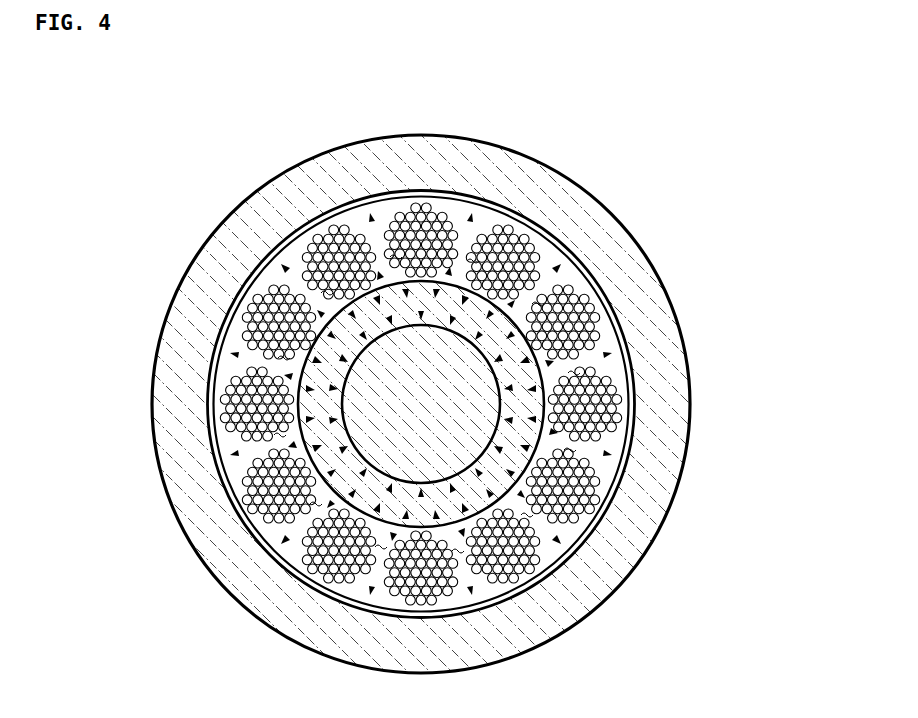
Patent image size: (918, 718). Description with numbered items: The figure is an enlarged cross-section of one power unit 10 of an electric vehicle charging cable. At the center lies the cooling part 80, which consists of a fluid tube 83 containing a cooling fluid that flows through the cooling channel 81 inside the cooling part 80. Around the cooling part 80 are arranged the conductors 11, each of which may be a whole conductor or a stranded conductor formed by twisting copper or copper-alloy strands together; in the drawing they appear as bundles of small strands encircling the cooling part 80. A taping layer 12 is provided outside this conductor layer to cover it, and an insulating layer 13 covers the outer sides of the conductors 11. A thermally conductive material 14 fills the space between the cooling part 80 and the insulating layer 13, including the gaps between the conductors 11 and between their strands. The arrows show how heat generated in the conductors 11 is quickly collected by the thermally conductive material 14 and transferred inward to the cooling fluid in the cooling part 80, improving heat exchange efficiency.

The power unit 10 is at (203, 177).
The conductor 11 is at (548, 193).
The taping layer 12 is at (580, 253).
The insulating layer 13 is at (513, 172).
The thermally conductive material 14 is at (617, 355).
The cooling part 80 is at (551, 438).
The cooling channel 81 is at (452, 413).
The fluid tube 83 is at (582, 488).